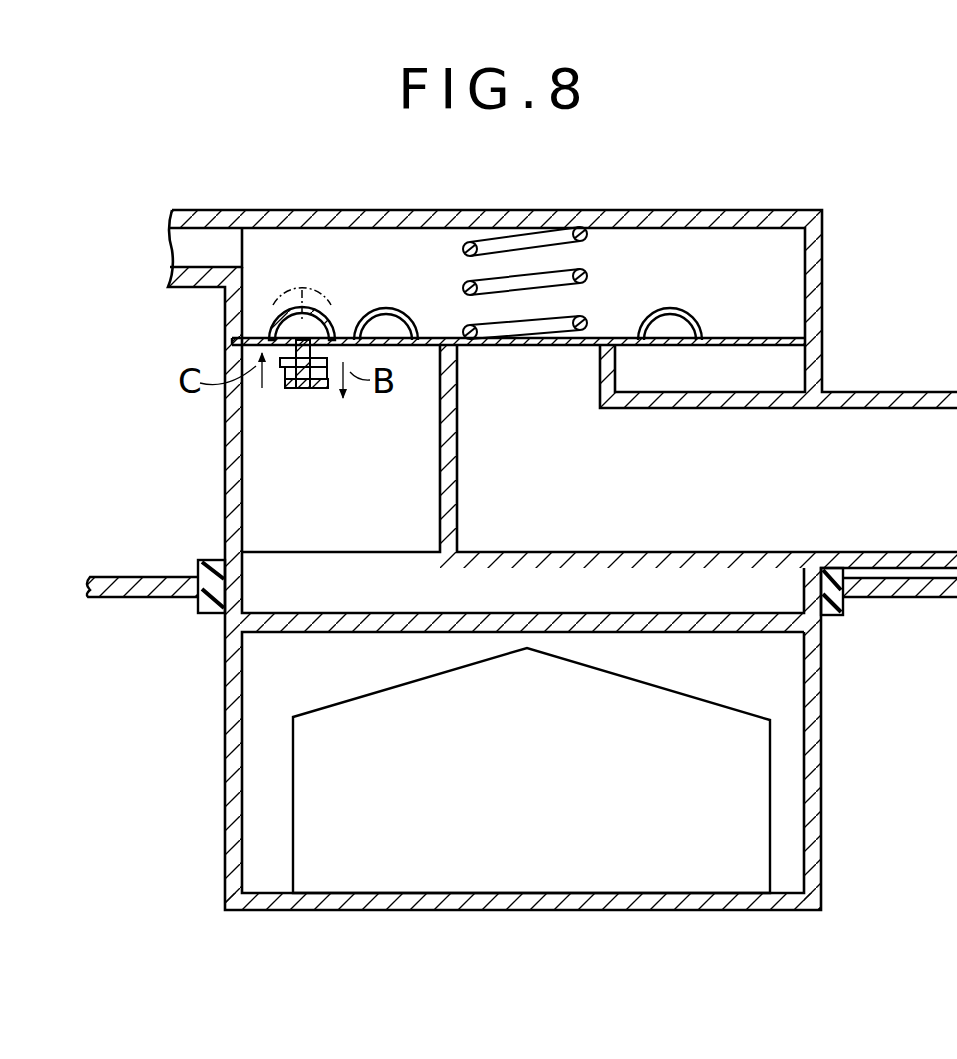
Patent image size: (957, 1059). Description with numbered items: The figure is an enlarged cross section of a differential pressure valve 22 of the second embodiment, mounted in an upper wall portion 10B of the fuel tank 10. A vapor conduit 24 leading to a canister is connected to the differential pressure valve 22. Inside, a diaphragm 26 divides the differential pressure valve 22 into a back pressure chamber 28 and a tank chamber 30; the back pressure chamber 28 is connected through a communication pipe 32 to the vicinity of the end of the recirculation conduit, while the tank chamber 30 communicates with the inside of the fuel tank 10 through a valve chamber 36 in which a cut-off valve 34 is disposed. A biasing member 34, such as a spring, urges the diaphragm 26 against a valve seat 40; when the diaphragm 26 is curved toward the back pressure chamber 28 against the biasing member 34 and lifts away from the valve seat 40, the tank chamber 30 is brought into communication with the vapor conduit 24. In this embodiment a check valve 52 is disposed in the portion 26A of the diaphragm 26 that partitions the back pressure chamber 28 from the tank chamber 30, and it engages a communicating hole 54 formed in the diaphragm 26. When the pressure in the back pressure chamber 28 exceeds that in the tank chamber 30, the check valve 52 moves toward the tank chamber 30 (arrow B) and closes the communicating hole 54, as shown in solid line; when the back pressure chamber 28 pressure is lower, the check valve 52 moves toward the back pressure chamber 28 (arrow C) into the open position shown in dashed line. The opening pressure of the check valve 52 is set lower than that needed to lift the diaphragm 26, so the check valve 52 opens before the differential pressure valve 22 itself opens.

The fuel tank 10 is at (123, 568).
The upper wall portion 10B is at (170, 577).
The differential pressure valve 22 is at (838, 220).
The vapor conduit 24 is at (903, 390).
The diaphragm 26 is at (737, 336).
The portion of the diaphragm 26A is at (258, 337).
The back pressure chamber 28 is at (440, 297).
The tank chamber 30 is at (388, 488).
The communication pipe 32 is at (188, 209).
The biasing member 34 is at (588, 275).
The valve chamber 36 is at (740, 689).
The valve seat 40 is at (447, 345).
The check valve 52 is at (336, 318).
The communicating hole 54 is at (292, 368).